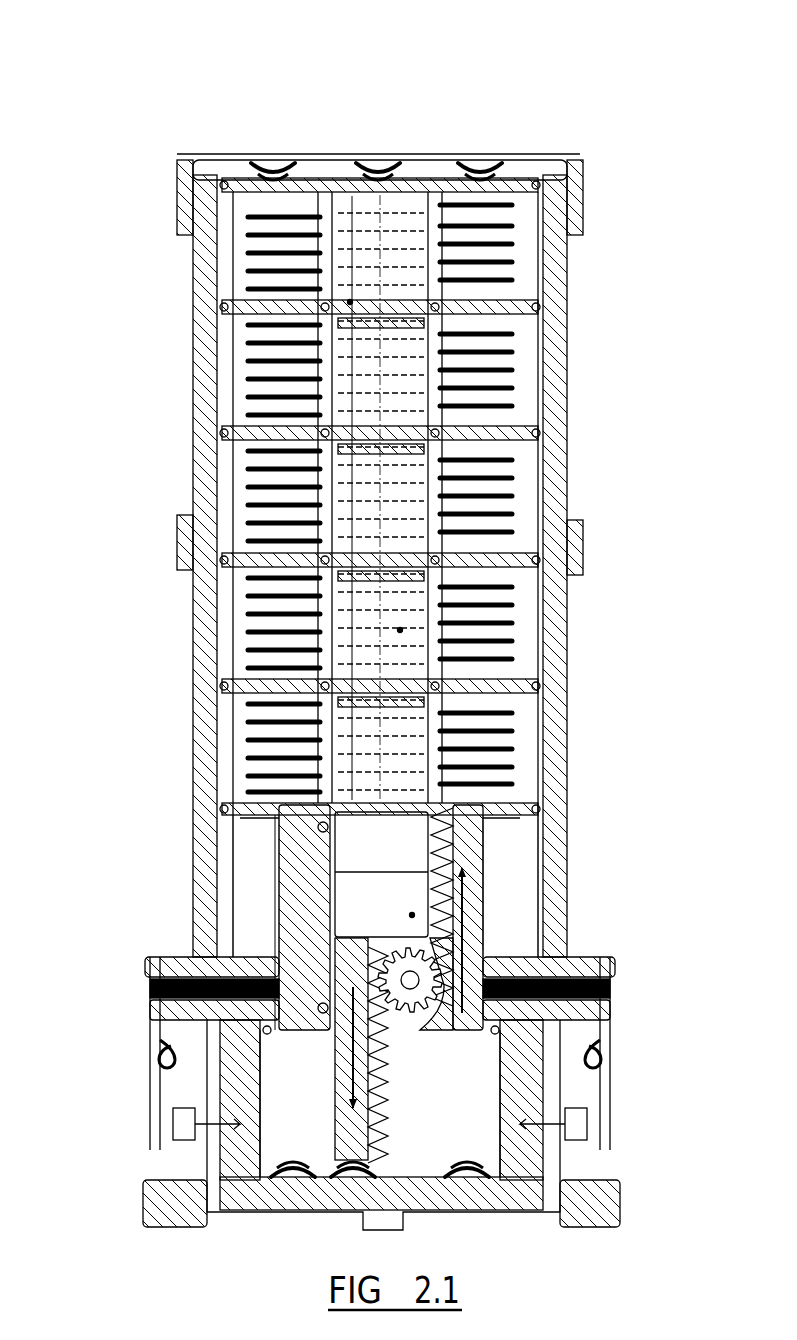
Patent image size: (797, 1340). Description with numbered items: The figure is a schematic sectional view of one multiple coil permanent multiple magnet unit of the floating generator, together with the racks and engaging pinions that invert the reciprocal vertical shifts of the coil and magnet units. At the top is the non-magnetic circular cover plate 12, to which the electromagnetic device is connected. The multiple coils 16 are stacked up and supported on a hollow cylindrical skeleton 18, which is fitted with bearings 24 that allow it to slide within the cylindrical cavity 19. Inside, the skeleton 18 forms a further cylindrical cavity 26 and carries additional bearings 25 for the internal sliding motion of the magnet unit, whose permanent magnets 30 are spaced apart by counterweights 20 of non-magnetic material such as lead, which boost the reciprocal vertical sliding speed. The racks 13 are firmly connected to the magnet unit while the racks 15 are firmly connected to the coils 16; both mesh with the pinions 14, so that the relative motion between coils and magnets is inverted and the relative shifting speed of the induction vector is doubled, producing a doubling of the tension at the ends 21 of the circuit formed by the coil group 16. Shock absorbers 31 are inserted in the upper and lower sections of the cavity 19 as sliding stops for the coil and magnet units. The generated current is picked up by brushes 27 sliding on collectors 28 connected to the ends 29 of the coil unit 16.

The non-magnetic circular cover plate 12 is at (420, 160).
The racks 13 is at (322, 1172).
The pinions 14 is at (412, 1014).
The racks 15 is at (472, 905).
The multiple coils 16 is at (505, 248).
The hollow cylindrical skeleton 18 is at (454, 154).
The cylindrical cavity 19 is at (248, 866).
The counterweights 20 is at (350, 482).
The ends of the circuit 21 is at (180, 1078).
The bearings 24 is at (330, 552).
The additional bearings 25 is at (300, 405).
The cylindrical cavity 26 is at (350, 225).
The brushes 27 is at (252, 978).
The collectors 28 is at (195, 893).
The ends of the multiple coil unit 29 is at (488, 818).
The permanent magnets 30 is at (348, 300).
The shock absorbers 31 is at (268, 160).